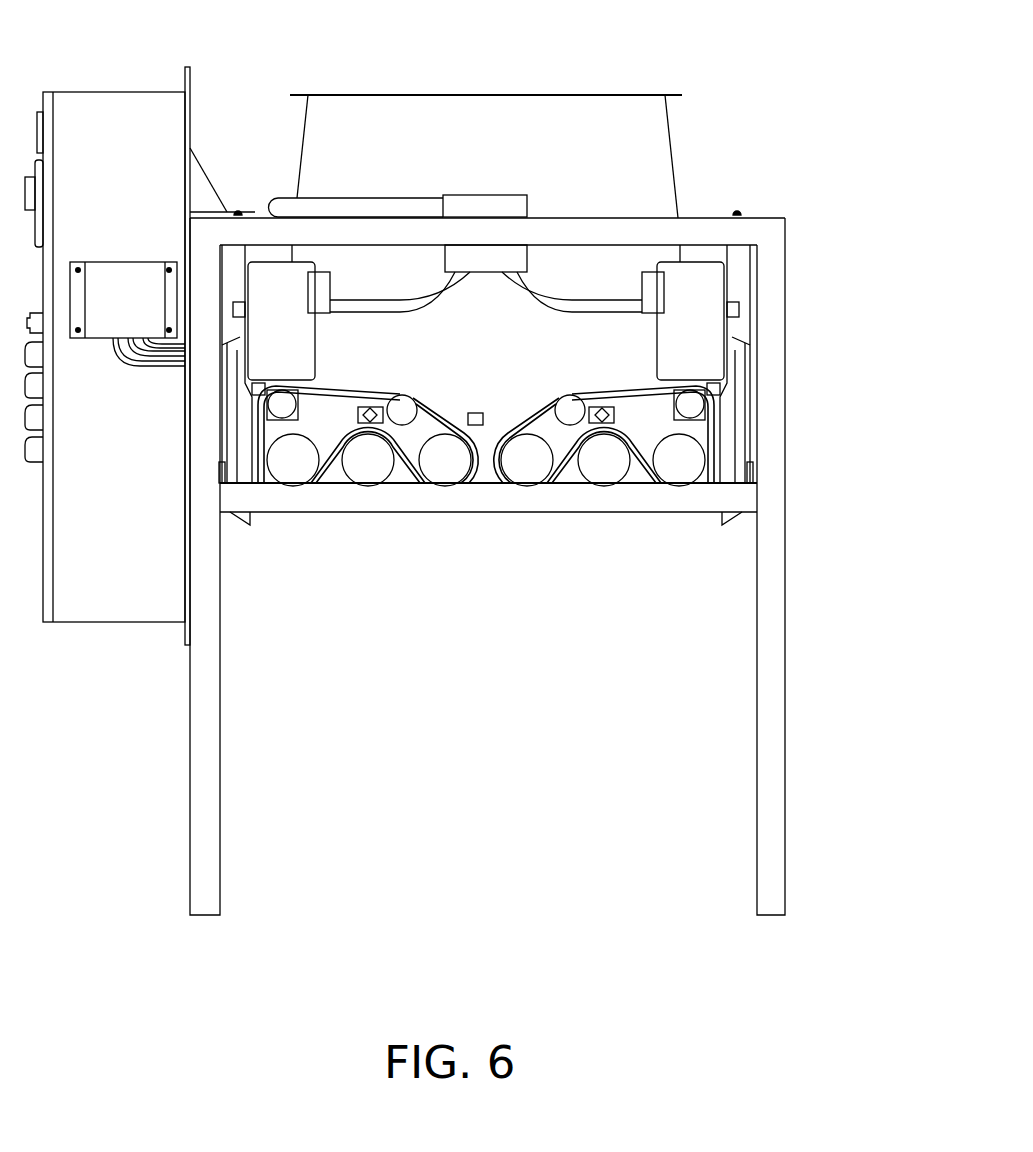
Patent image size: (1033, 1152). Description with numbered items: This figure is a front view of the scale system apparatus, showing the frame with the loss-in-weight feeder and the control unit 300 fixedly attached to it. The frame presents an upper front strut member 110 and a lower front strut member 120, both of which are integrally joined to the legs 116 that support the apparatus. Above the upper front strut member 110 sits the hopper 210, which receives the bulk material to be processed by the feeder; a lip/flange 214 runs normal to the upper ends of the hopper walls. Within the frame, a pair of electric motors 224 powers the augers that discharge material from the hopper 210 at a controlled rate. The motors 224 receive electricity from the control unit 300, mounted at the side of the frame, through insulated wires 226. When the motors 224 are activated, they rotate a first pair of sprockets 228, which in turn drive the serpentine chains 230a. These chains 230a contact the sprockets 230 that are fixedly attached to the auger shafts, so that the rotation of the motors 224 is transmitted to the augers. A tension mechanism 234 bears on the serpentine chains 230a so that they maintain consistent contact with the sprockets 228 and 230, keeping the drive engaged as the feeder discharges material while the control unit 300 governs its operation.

The upper front strut member 110 is at (705, 225).
The legs 116 is at (211, 760).
The lower front strut member 120 is at (697, 498).
The hopper 210 is at (635, 107).
The lip/flange 214 is at (348, 95).
The electric motors 224 is at (297, 345).
The insulated wires 226 is at (367, 207).
The first pair of sprockets 228 is at (282, 403).
The sprockets 230 is at (297, 475).
The serpentine chains 230a is at (470, 483).
The tension mechanism 234 is at (565, 408).
The control unit 300 is at (100, 562).